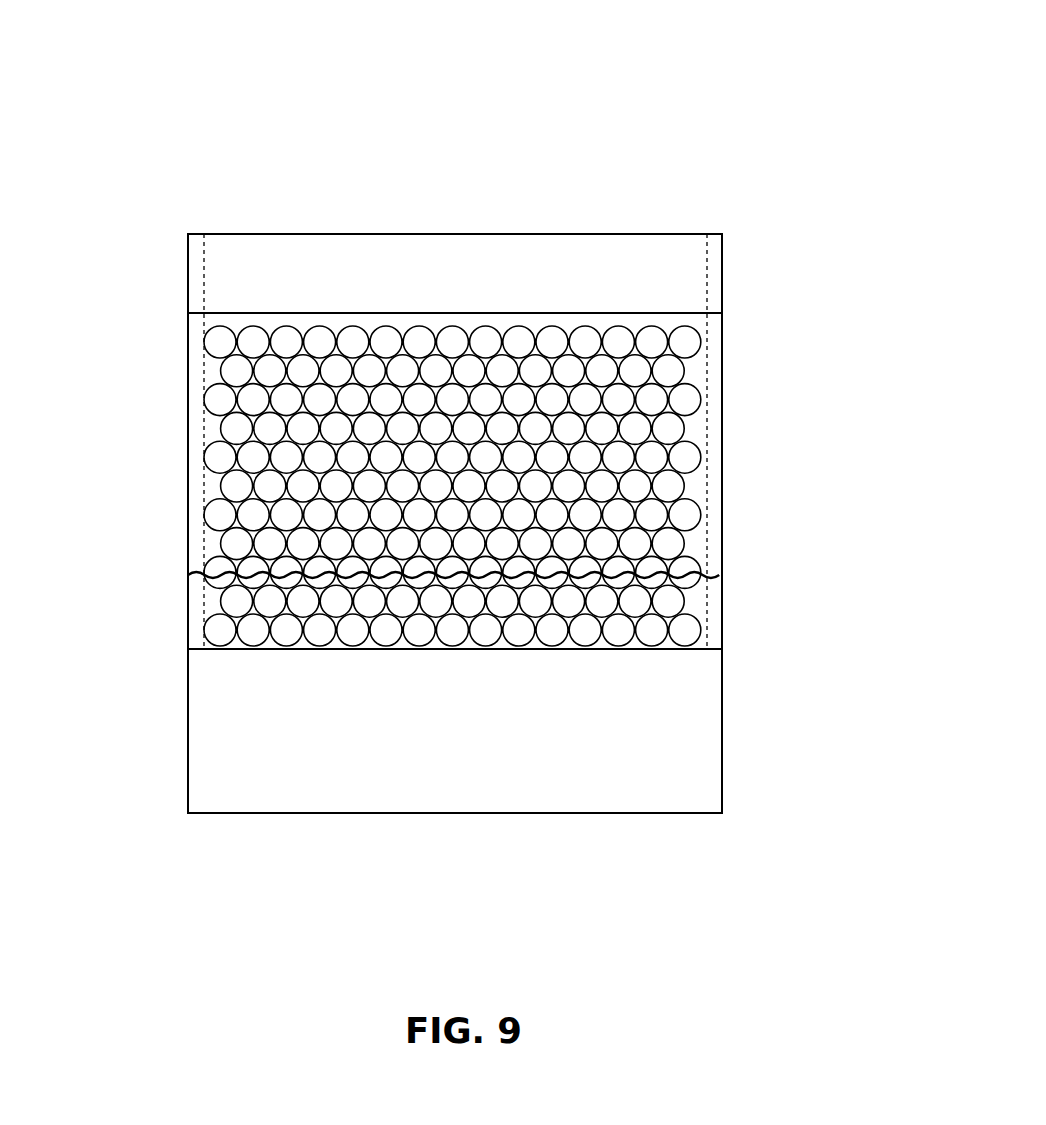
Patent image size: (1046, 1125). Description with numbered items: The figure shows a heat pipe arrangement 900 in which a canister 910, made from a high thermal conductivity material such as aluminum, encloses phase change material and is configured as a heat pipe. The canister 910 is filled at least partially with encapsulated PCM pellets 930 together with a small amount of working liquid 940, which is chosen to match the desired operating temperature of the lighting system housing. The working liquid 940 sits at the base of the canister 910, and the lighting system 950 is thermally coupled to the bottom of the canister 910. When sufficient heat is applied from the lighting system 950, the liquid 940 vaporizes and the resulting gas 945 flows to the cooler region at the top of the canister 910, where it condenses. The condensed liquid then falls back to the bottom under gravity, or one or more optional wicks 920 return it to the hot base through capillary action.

The display device 900 is at (205, 46).
The canister 910 is at (608, 234).
The wick 920 is at (207, 350).
The encapsulated PCM pellets 930 is at (697, 443).
The working liquid 940 is at (708, 573).
The gas 945 is at (677, 280).
The lighting system 950 is at (722, 712).